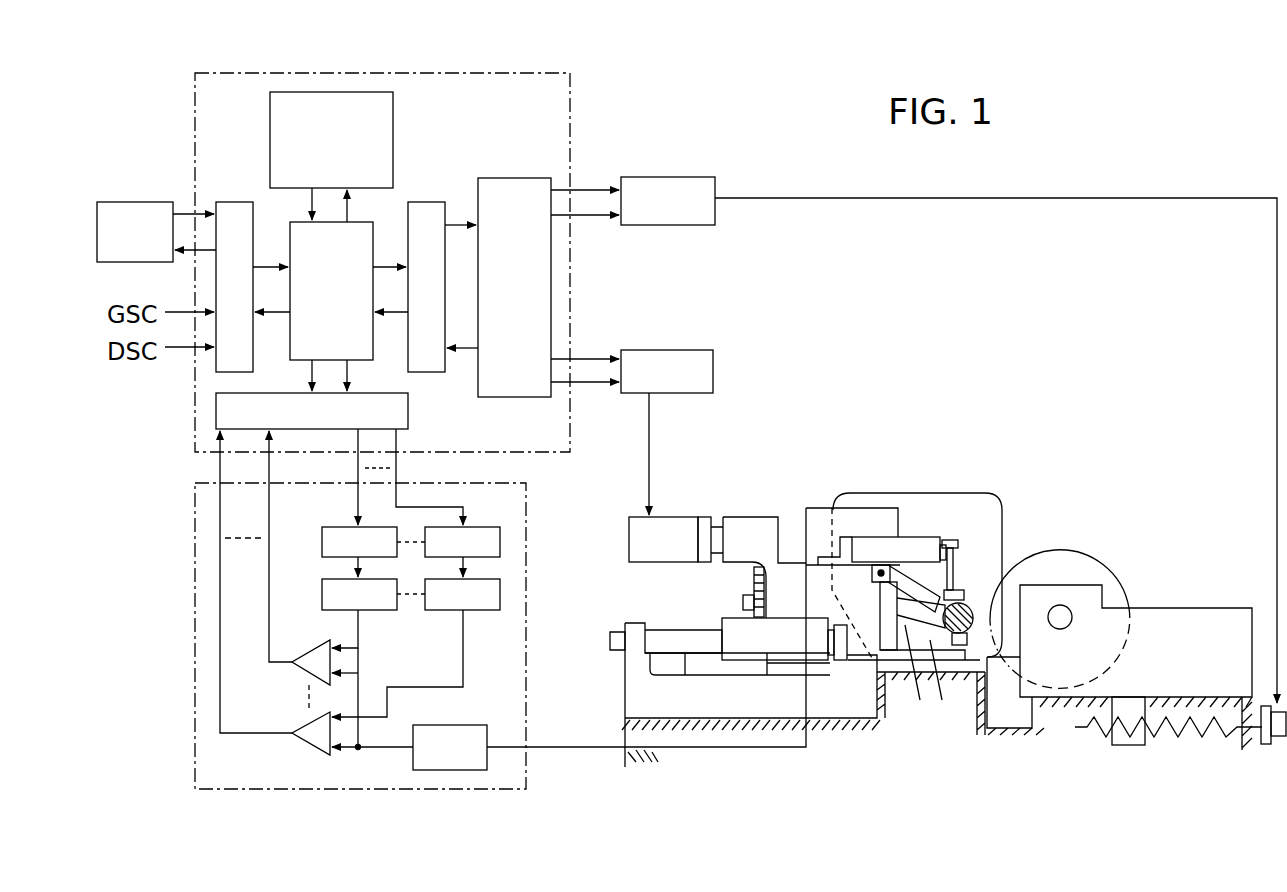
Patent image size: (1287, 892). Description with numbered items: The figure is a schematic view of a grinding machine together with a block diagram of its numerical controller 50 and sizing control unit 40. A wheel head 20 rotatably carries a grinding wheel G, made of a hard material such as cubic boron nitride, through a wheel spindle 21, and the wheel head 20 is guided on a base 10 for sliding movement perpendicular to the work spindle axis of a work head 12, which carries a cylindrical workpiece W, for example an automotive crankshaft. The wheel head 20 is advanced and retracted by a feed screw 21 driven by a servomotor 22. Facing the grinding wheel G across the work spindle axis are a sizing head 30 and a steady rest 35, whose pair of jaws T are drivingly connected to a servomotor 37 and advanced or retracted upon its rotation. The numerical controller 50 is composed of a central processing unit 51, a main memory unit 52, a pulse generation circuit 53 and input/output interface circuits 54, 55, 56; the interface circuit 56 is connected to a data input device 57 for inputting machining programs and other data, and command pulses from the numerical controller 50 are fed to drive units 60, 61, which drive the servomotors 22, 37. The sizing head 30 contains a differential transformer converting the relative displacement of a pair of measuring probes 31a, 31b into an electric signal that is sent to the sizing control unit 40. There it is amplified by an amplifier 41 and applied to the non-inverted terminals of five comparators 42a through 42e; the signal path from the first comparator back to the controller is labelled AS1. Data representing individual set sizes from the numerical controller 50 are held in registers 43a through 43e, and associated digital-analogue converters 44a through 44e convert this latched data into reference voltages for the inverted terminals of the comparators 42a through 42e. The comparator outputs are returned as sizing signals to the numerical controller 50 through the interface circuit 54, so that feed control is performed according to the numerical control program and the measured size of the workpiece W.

The numerical controller 50 is at (262, 73).
The central processing unit 51 is at (290, 230).
The main memory unit 52 is at (393, 104).
The pulse generation circuit 53 is at (503, 178).
The input/output interface circuit 54 is at (408, 418).
The input/output interface circuit 55 is at (425, 202).
The input/output interface circuit 56 is at (216, 205).
The data input device 57 is at (105, 202).
The drive unit 60 is at (700, 177).
The drive unit 61 is at (698, 350).
The sizing control unit 40 is at (195, 487).
The amplifier 41 is at (472, 725).
The comparator 42a is at (300, 668).
The comparator 42e is at (300, 742).
The register 43a is at (340, 527).
The register 43e is at (500, 530).
The digital-analogue converter 44a is at (322, 590).
The digital-analogue converter 44e is at (500, 593).
The analog signal line AS1 is at (269, 612).
The servomotor 37 is at (676, 527).
The steady rest 35 is at (754, 520).
The work head 12 is at (915, 495).
The sizing head 30 is at (915, 537).
The measuring probe 31a is at (962, 560).
The measuring probe 31b is at (925, 650).
The workpiece W is at (1000, 562).
The jaws T is at (905, 673).
The grinding wheel G is at (1082, 560).
The wheel head 20 is at (1200, 615).
The wheel spindle / feed screw 21 is at (1060, 630).
The servomotor 22 is at (1276, 740).
The base 10 is at (995, 732).